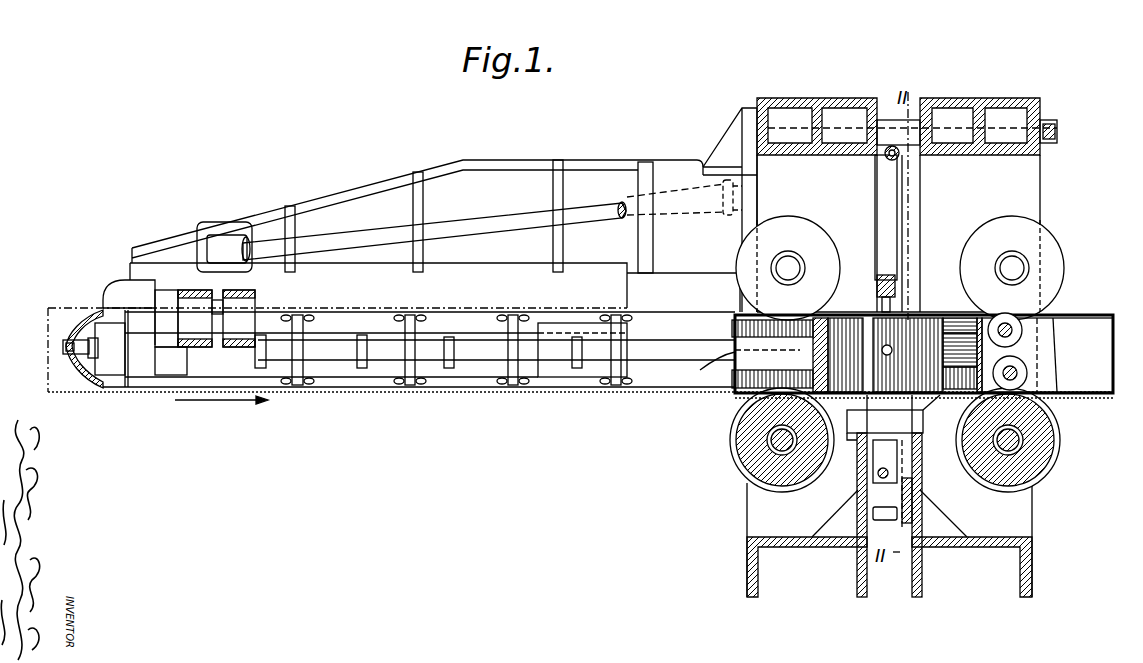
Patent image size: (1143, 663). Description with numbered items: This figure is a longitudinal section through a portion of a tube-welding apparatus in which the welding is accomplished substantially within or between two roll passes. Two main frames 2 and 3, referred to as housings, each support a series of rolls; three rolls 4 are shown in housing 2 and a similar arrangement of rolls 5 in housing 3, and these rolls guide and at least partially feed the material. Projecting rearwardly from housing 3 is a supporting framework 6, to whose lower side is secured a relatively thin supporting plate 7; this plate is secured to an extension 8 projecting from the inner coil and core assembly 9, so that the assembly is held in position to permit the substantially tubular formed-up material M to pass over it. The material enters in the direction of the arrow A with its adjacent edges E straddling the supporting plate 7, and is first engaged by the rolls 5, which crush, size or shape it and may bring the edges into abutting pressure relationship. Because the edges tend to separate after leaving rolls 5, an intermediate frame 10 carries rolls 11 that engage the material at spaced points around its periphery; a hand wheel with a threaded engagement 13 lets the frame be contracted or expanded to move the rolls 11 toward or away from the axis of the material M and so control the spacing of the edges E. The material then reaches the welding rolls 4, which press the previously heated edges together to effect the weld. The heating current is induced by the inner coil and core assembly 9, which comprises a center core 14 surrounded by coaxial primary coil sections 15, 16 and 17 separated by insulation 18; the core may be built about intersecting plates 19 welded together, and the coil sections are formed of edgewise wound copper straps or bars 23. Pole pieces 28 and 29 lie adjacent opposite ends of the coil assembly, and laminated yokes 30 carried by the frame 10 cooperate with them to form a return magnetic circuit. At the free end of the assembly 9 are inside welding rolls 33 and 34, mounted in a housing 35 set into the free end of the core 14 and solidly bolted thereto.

The main frame (housing) 2 is at (975, 98).
The main frame (housing) 3 is at (812, 98).
The welding rolls 4 is at (1050, 250).
The rolls 5 is at (822, 244).
The supporting framework 6 is at (500, 188).
The supporting plate 7 is at (436, 287).
The extension 8 is at (390, 356).
The inner coil and core assembly 9 is at (712, 421).
The intermediate frame 10 is at (886, 194).
The rolls 11 is at (878, 312).
The threaded engagement 13 is at (886, 158).
The center core 14 is at (945, 318).
The coil section 15 is at (815, 352).
The coil section 16 is at (852, 430).
The coil section 17 is at (918, 378).
The insulation 18 is at (892, 483).
The intersecting plates 19 is at (955, 318).
The edgewise wound copper straps or bars 23 is at (852, 312).
The pole piece 28 is at (700, 370).
The pole piece 29 is at (988, 318).
The laminated yokes 30 is at (896, 318).
The inside welding roll 33 is at (1022, 332).
The inside welding roll 34 is at (1027, 374).
The housing 35 is at (1040, 355).
The adjacent edges E is at (72, 308).
The material M is at (48, 362).
The arrow A is at (225, 402).